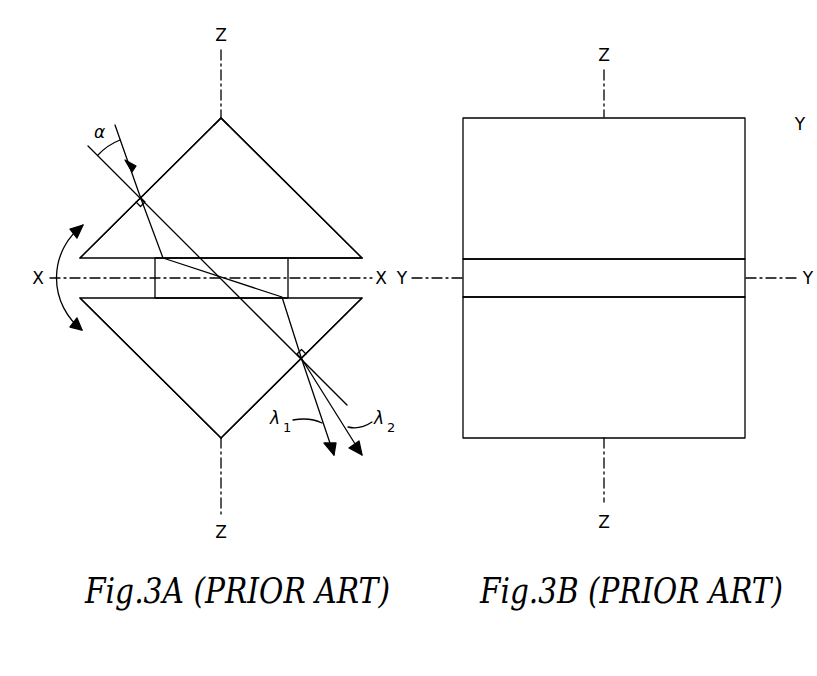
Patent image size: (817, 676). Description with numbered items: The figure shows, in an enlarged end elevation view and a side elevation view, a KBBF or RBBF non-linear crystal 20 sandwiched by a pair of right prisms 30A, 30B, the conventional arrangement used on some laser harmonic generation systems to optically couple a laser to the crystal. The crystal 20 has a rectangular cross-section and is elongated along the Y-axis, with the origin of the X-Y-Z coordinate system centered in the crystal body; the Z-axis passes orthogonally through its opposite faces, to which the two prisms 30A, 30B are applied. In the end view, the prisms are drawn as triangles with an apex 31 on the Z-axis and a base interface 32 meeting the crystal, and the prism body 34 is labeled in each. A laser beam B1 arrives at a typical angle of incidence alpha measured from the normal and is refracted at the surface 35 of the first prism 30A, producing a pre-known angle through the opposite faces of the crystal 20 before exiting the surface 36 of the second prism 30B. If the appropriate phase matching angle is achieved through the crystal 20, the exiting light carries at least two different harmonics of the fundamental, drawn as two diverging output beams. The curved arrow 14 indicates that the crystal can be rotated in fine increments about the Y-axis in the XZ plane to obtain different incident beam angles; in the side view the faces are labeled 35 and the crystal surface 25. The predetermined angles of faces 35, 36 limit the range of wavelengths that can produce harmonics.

In FIG. 3A, the rotation arrow 14 is at (62, 250).
In FIG. 3A, the non-linear crystal 20 is at (290, 283).
In FIG. 3B, the non-linear crystal 20 is at (718, 279).
In FIG. 3B, the plate surface 25 is at (596, 289).
In FIG. 3A, the right prism 30A is at (280, 174).
In FIG. 3B, the right prism 30A is at (683, 118).
In FIG. 3A, the right prism 30B is at (139, 359).
In FIG. 3B, the right prism 30B is at (505, 440).
In FIG. 3A, the prism apex 31 is at (223, 119).
In FIG. 3A, the prism base interface 32 is at (351, 261).
In FIG. 3A, the prism body 34 is at (213, 199).
In FIG. 3A, the surface of prism 35 is at (203, 135).
In FIG. 3B, the surface of prism 35 is at (596, 200).
In FIG. 3A, the surface of prism 36 is at (319, 211).
In FIG. 3A, the laser beam B1 is at (126, 140).